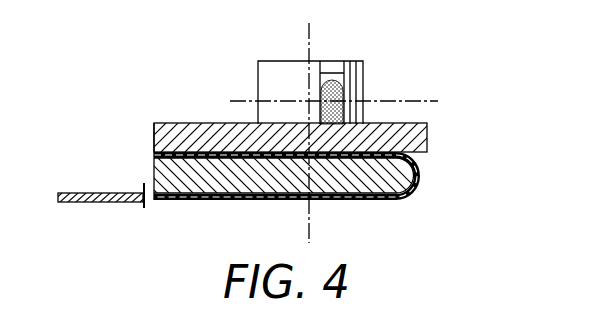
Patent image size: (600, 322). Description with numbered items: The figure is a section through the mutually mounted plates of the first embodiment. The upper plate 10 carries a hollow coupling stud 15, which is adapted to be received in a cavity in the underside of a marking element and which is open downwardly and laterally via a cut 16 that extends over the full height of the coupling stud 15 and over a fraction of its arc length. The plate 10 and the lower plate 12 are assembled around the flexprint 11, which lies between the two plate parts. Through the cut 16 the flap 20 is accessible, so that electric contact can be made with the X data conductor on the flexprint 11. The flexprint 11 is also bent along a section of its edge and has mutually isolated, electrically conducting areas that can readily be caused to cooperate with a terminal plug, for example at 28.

The plate 10 is at (387, 138).
The flexprint 11 is at (413, 162).
The plate 12 is at (352, 172).
The coupling stud 15 is at (273, 73).
The cut 16 is at (330, 72).
The flap 20 is at (345, 90).
The terminal plug 28 is at (82, 193).